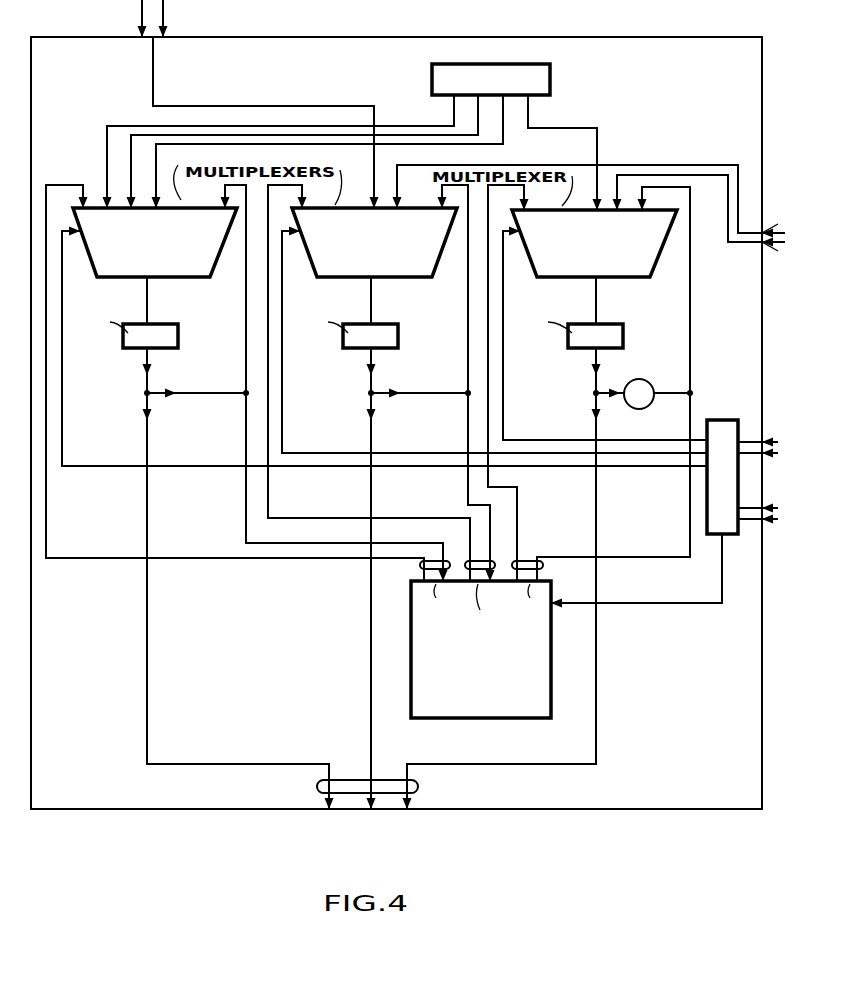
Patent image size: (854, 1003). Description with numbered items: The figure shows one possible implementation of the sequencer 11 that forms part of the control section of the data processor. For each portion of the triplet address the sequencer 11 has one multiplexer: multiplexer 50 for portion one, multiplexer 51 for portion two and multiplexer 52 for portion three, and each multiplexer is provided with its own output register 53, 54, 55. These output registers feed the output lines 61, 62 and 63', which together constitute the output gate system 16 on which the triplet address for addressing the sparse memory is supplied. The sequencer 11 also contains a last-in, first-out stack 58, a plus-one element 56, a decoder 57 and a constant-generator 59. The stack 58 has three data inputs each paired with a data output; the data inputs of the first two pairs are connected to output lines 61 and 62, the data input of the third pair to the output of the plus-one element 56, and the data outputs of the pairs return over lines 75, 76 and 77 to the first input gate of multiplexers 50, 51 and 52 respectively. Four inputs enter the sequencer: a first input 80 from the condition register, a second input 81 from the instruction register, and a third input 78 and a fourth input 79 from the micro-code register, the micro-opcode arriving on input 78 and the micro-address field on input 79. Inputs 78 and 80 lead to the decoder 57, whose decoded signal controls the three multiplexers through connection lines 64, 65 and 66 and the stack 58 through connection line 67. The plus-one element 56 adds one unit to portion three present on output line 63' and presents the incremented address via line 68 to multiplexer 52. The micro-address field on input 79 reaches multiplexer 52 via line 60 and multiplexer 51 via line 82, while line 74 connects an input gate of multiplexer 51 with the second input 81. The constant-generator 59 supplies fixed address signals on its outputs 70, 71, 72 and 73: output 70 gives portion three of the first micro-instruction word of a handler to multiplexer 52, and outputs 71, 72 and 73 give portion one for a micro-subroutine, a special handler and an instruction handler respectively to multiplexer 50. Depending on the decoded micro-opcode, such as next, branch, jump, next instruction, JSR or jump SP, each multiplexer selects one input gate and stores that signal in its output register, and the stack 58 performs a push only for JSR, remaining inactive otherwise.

The sequencer 11 is at (620, 37).
The output gate system 16 is at (418, 787).
The multiplexer 50 is at (193, 278).
The multiplexer 51 is at (415, 278).
The multiplexer 52 is at (635, 278).
The output register 53 is at (178, 337).
The output register 54 is at (398, 337).
The output register 55 is at (623, 337).
The plus 1 element 56 is at (652, 384).
The decoder 57 is at (718, 420).
The stack 58 is at (510, 720).
The constant-generator 59 is at (550, 84).
The line 60 is at (730, 252).
The output line 61 is at (150, 708).
The output line 62 is at (373, 708).
The output line 63' is at (547, 543).
The connection line 64 is at (62, 438).
The connection line 65 is at (282, 438).
The connection line 66 is at (503, 418).
The connection line 67 is at (618, 604).
The line 68 is at (690, 316).
The output of constant-generator 70 is at (530, 100).
The output of constant-generator 71 is at (452, 100).
The output of constant-generator 72 is at (476, 100).
The output of constant-generator 73 is at (505, 100).
The line 74 is at (215, 106).
The stack feedback line 75 is at (46, 378).
The stack feedback line 76 is at (268, 378).
The stack feedback line 77 is at (468, 358).
The third input 78 is at (767, 505).
The fourth input 79 is at (765, 228).
The first input 80 is at (767, 435).
The second input 81 is at (166, 30).
The line 82 is at (690, 165).